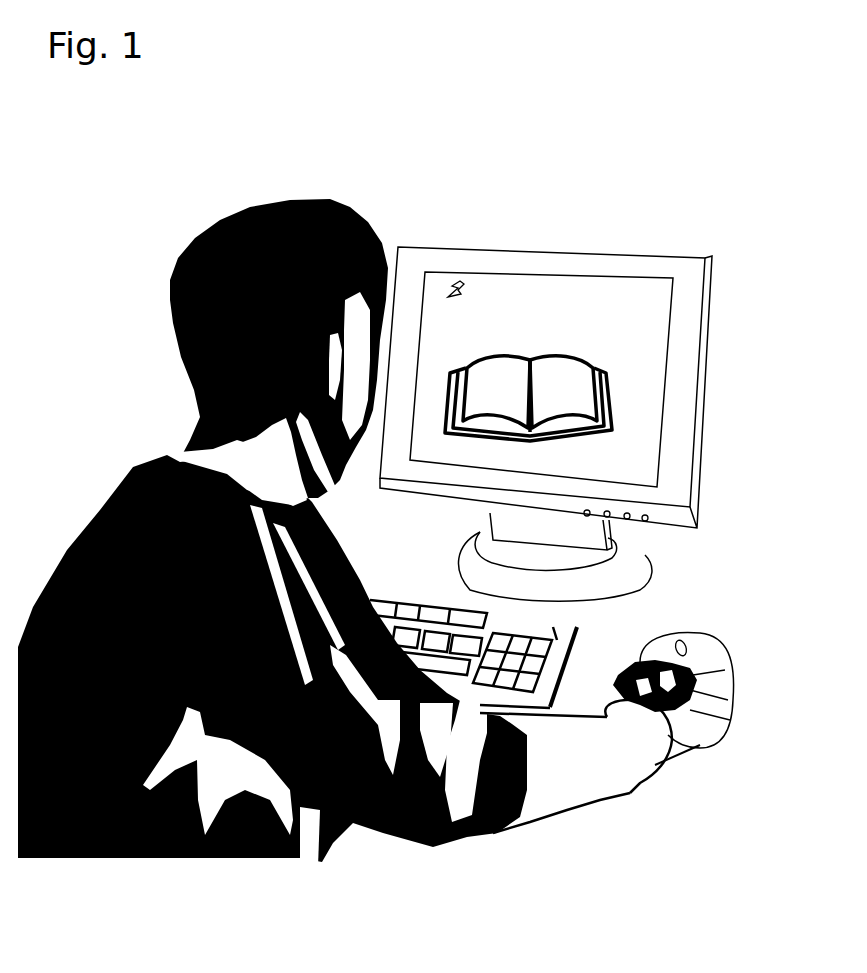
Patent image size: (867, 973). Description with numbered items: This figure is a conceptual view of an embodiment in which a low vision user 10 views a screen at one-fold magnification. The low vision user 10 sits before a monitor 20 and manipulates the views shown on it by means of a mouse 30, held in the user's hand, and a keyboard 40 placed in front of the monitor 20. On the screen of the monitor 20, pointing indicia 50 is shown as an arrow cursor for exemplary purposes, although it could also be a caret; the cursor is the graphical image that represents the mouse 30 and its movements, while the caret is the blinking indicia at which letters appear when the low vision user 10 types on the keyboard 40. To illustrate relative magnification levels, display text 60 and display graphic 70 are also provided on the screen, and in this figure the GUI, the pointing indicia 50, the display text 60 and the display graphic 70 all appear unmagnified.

The low vision user 10 is at (287, 200).
The monitor 20 is at (600, 247).
The mouse 30 is at (707, 647).
The keyboard 40 is at (437, 600).
The pointing indicia 50 is at (458, 283).
The display text 60 is at (625, 343).
The display graphic 70 is at (615, 378).